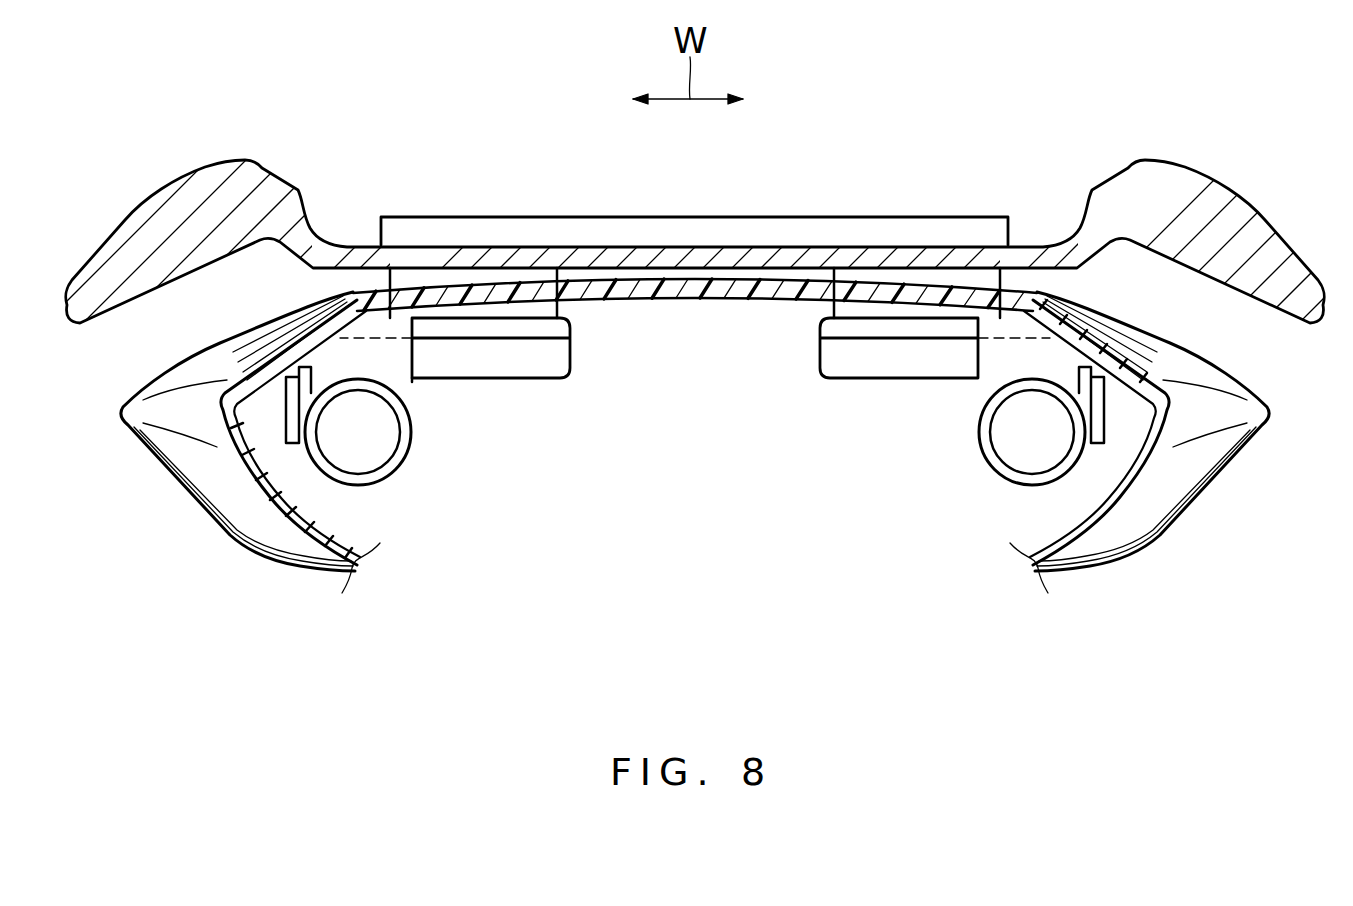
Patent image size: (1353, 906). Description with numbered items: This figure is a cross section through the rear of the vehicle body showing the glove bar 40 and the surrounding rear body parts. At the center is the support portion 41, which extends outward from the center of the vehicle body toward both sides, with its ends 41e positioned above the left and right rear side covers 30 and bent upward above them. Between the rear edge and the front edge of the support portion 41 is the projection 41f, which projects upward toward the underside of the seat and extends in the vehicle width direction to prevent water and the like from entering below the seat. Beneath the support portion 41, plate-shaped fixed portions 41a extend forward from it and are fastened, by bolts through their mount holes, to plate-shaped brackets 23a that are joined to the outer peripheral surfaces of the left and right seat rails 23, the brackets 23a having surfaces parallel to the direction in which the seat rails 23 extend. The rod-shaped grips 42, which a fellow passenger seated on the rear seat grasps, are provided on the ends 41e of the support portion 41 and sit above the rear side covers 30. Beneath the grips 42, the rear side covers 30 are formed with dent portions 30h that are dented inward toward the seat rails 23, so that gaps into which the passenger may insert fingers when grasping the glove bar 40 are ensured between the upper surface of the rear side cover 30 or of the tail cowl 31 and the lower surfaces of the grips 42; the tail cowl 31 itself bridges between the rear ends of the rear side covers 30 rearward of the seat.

The seat rail 23 is at (407, 438).
The bracket 23a is at (570, 323).
The rear side cover 30 is at (125, 410).
The dent portion 30h is at (268, 363).
The tail cowl 31 is at (592, 287).
The glove bar 40 is at (800, 212).
The support portion 41 is at (510, 243).
The fixed portion 41a is at (430, 278).
The end of support portion 41e is at (305, 233).
The projection 41f is at (698, 217).
The grip 42 is at (130, 235).